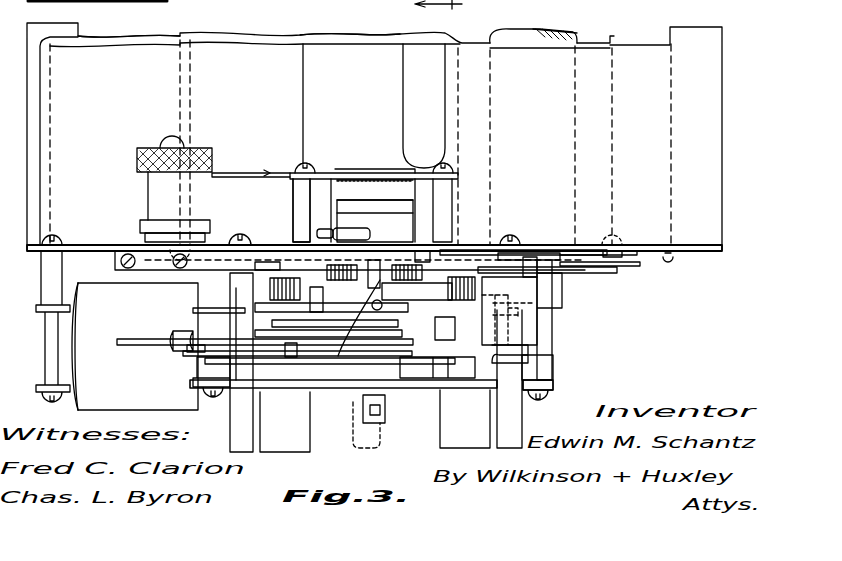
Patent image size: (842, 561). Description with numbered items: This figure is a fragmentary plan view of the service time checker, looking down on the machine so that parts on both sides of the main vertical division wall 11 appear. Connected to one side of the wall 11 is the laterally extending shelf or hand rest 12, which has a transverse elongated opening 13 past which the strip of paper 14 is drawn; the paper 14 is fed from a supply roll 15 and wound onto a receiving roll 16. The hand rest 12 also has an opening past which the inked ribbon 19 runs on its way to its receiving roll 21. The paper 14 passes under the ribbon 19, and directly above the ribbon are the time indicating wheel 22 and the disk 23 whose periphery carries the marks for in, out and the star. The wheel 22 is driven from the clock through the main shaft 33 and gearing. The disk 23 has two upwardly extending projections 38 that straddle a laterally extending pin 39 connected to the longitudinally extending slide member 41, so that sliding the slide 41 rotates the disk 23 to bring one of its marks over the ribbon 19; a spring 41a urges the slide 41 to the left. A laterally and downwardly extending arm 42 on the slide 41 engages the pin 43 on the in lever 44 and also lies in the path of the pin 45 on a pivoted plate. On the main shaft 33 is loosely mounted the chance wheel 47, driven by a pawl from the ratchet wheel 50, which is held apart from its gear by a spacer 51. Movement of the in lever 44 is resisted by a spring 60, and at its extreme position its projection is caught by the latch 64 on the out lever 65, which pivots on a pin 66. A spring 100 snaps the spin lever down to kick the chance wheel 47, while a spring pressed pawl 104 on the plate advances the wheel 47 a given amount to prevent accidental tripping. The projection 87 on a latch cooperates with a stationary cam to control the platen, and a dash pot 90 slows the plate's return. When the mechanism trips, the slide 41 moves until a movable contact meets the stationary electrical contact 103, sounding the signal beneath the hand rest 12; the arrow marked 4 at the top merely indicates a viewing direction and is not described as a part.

The section line 4 is at (438, 14).
The main vertical division wall 11 is at (708, 248).
The hand rest 12 is at (374, 136).
The transverse elongated opening 13 is at (405, 108).
The paper 14 is at (268, 88).
The supply roll 15 is at (610, 36).
The receiving roll 16 is at (143, 40).
The inked ribbon 19 is at (251, 164).
The receiving roll 21 is at (150, 200).
The time indicating wheel 22 is at (364, 170).
The disk 23 is at (393, 210).
The main shaft 33 is at (365, 397).
The upwardly extending projections 38 is at (352, 233).
The laterally extending pin 39 is at (324, 228).
The slide member 41 is at (457, 248).
The spring 41a is at (645, 250).
The arm 42 is at (355, 376).
The pin 43 is at (240, 298).
The in lever 44 is at (160, 330).
The pin 45 is at (272, 252).
The chance wheel 47 is at (462, 280).
The ratchet wheel 50 is at (420, 262).
The spacer 51 is at (313, 281).
The spring 60 is at (302, 360).
The latch 64 is at (528, 358).
The out lever 65 is at (600, 273).
The pin 66 is at (513, 404).
The projection 87 is at (374, 1).
The dash pot 90 is at (135, 346).
The spring 100 is at (185, 349).
The stationary electrical contact 103 is at (258, 252).
The spring pressed pawl 104 is at (432, 304).